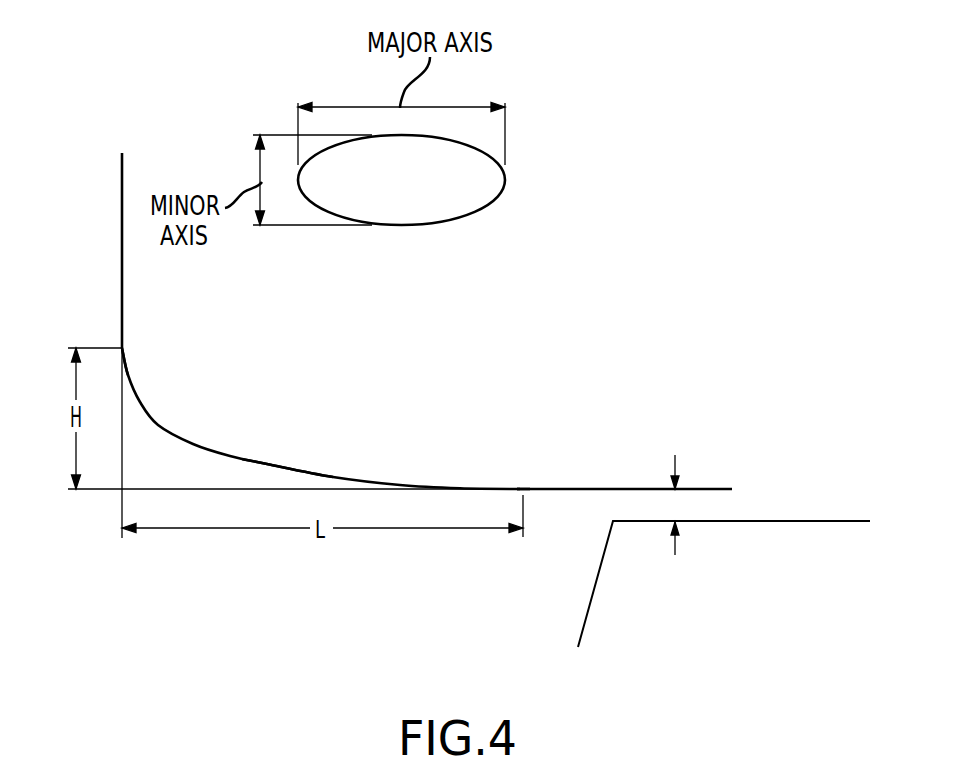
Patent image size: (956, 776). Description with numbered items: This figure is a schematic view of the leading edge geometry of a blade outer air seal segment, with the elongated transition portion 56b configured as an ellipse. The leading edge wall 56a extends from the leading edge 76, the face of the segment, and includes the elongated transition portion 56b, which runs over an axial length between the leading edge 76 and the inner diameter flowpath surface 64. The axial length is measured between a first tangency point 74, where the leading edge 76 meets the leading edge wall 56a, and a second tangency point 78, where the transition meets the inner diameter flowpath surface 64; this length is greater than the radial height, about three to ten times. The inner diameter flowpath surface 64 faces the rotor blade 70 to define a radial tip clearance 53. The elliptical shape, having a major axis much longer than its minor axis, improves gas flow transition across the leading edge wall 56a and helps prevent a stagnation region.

The radial tip clearance 53 is at (674, 505).
The leading edge wall 56a is at (190, 446).
The elongated transition portion 56b is at (265, 462).
The inner diameter flowpath surface 64 is at (562, 490).
The rotor blade 70 is at (793, 547).
The first tangency point 74 is at (298, 180).
The leading edge 76 is at (123, 355).
The second tangency point 78 is at (373, 225).